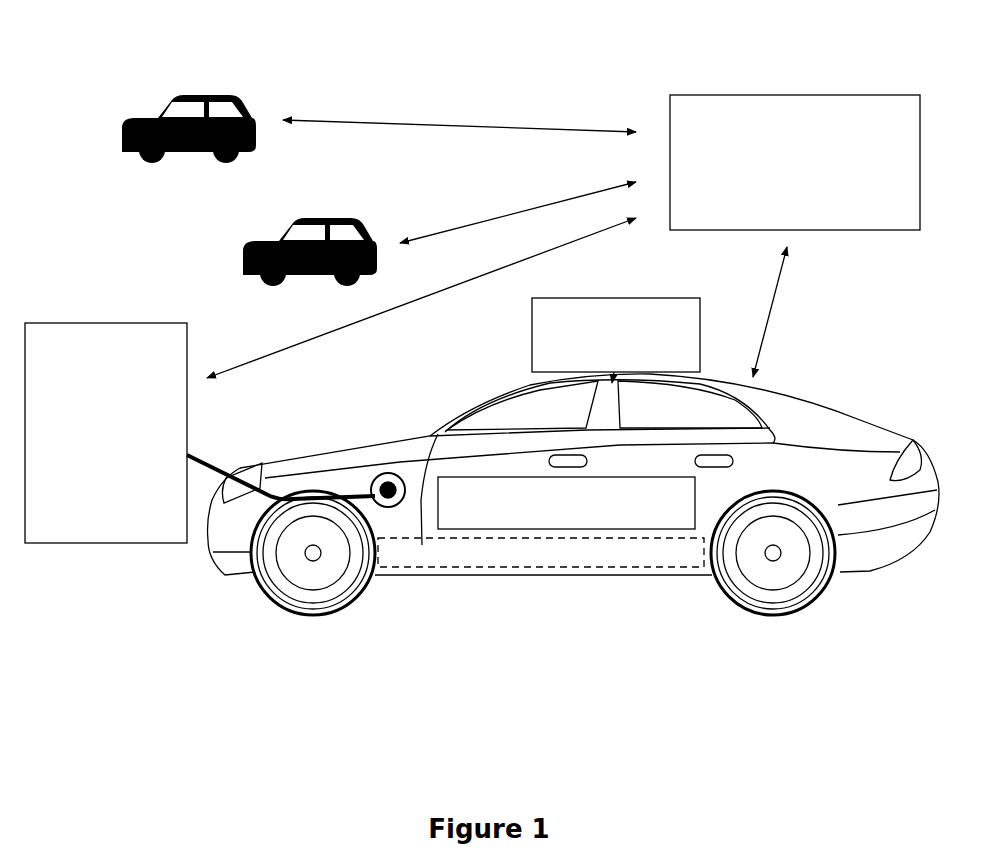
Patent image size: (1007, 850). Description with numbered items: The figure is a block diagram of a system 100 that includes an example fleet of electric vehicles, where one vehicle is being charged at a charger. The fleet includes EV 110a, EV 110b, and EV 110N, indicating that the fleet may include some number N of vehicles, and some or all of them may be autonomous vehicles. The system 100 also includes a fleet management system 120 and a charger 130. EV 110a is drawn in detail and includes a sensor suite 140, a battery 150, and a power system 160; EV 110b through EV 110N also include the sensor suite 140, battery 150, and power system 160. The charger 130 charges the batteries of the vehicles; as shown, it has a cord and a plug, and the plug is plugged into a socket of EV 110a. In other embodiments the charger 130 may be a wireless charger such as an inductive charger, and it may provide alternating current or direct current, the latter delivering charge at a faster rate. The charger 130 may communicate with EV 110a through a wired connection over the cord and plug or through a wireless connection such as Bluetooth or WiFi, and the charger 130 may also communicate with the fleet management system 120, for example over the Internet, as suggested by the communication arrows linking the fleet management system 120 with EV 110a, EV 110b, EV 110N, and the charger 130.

The system 100 is at (473, 34).
The EV 110a is at (843, 531).
The EV 110b is at (104, 193).
The EV 110N is at (204, 309).
The fleet management system 120 is at (781, 201).
The charger 130 is at (126, 444).
The sensor suite 140 is at (602, 358).
The battery 150 is at (567, 563).
The power system 160 is at (622, 514).